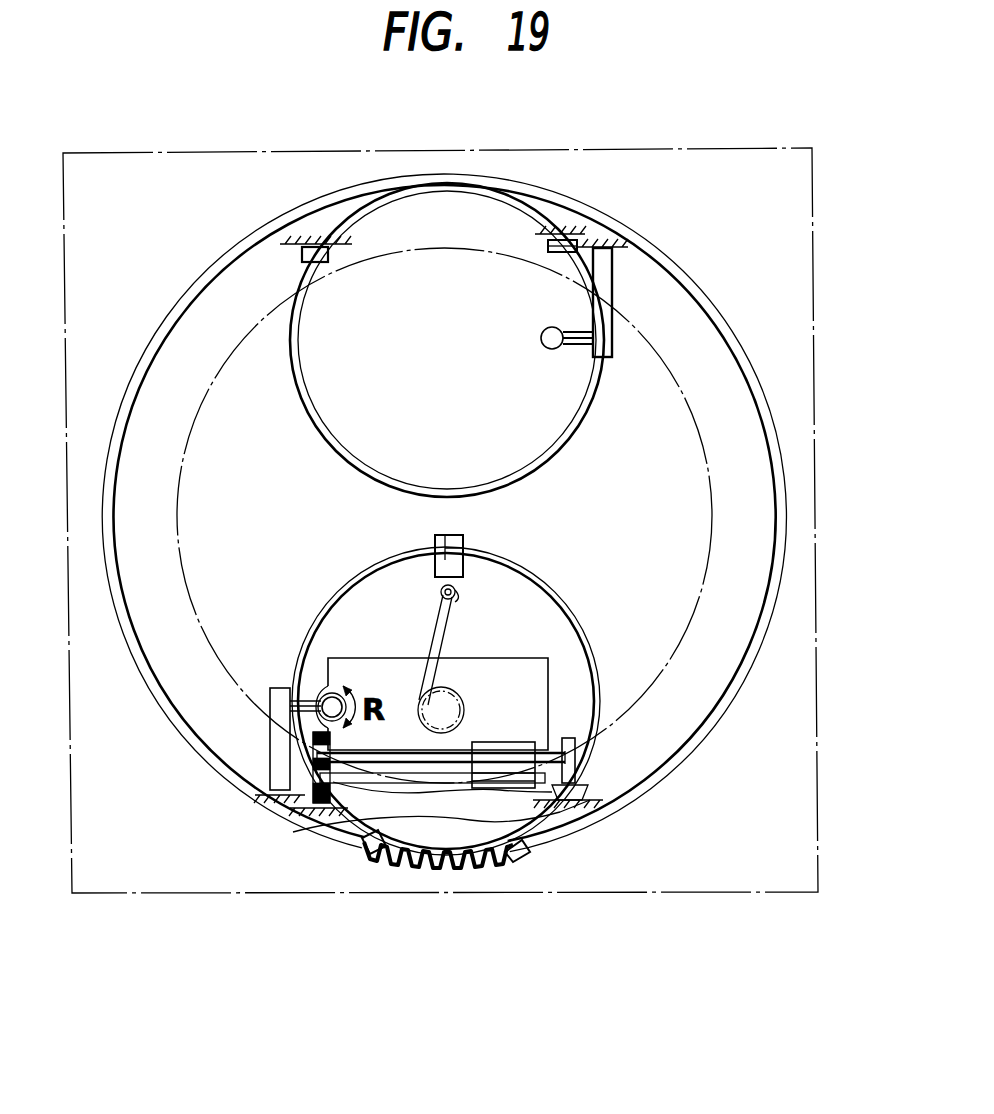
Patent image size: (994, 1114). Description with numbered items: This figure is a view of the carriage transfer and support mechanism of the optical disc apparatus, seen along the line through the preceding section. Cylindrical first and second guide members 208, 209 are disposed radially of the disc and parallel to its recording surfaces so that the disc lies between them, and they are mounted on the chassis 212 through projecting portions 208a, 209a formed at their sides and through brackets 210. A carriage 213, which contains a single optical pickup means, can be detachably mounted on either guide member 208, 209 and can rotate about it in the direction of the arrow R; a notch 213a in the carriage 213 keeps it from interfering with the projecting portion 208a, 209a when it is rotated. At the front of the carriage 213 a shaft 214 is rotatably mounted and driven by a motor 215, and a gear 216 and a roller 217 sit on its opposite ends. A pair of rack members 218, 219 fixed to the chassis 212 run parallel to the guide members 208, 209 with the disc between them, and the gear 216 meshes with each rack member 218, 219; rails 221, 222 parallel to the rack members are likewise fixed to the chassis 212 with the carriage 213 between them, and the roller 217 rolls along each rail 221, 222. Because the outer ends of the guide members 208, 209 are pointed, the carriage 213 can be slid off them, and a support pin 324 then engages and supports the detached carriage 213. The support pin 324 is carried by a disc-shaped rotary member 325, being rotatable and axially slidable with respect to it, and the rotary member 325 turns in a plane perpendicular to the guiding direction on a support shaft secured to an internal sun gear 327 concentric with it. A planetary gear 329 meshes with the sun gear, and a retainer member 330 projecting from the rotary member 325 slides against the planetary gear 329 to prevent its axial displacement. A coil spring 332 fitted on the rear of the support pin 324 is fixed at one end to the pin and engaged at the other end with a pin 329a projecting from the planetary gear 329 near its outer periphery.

The first guide member 208 is at (580, 388).
The projecting portion 208a is at (557, 357).
The second guide member 209 is at (324, 688).
The projecting portion 209a is at (320, 693).
The bracket 210 is at (603, 268).
The chassis 212 is at (318, 246).
The carriage 213 is at (535, 675).
The notch 213a is at (316, 716).
The shaft 214 is at (383, 760).
The motor 215 is at (508, 785).
The gear 216 is at (345, 790).
The roller 217 is at (572, 752).
The rack member 218 is at (565, 240).
The rack member 219 is at (313, 805).
The rail 221 is at (305, 255).
The rail 222 is at (597, 782).
The support pin 324 is at (455, 710).
The rotary member 325 is at (697, 512).
The internal sun gear 327 is at (475, 877).
The planetary gear 329 is at (446, 753).
The pin 329a is at (458, 592).
The retainer member 330 is at (465, 536).
The coil spring 332 is at (430, 624).